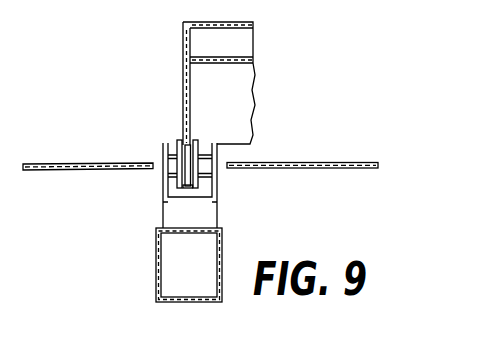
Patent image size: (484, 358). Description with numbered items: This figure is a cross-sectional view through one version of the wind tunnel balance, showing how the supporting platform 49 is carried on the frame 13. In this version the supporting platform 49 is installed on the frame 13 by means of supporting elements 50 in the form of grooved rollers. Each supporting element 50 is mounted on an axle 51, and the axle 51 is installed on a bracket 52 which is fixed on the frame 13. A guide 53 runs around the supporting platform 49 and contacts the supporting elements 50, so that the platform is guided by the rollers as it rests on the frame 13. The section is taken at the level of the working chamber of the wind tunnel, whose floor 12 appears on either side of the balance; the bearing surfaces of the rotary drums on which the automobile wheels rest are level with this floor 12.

The floor 12 is at (62, 163).
The frame 13 is at (166, 267).
The supporting platform 49 is at (185, 47).
The supporting element 50 is at (185, 183).
The axle 51 is at (176, 162).
The bracket 52 is at (170, 220).
The guide 53 is at (185, 100).